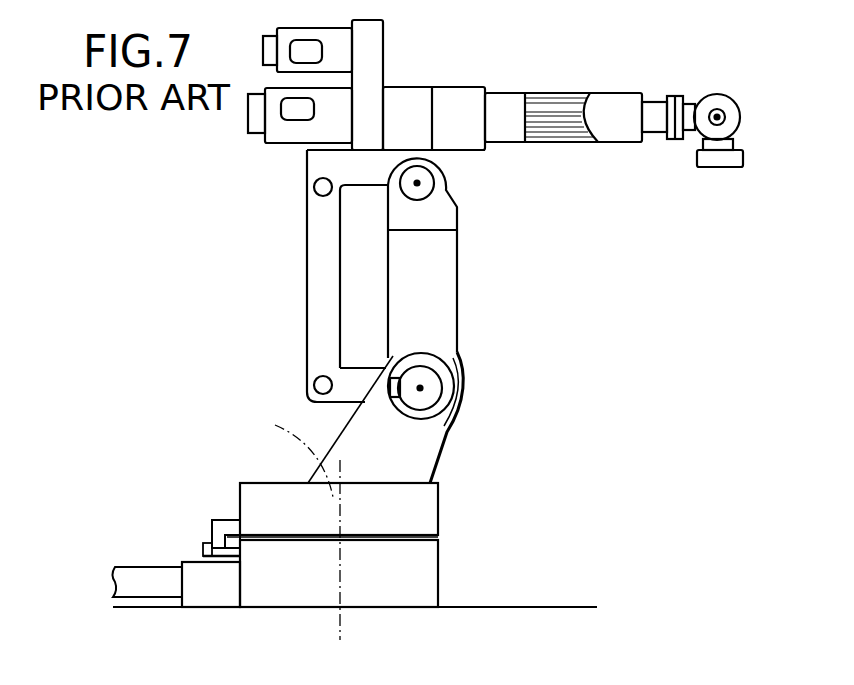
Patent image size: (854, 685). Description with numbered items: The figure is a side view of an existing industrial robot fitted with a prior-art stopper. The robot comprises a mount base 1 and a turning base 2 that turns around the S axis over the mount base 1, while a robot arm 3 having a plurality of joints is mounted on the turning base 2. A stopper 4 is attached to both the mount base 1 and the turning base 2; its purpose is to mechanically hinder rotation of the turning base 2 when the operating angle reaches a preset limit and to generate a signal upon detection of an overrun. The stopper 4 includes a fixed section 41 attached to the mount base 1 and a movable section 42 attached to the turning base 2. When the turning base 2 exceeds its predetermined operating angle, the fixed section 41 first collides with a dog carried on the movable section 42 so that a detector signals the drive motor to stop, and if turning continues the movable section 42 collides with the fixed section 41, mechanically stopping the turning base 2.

The mount base 1 is at (422, 577).
The turning base 2 is at (430, 505).
The robot arm 3 is at (453, 292).
The stopper 4 is at (223, 519).
The fixed section 41 is at (205, 556).
The movable section 42 is at (212, 533).
The S axis S is at (296, 525).